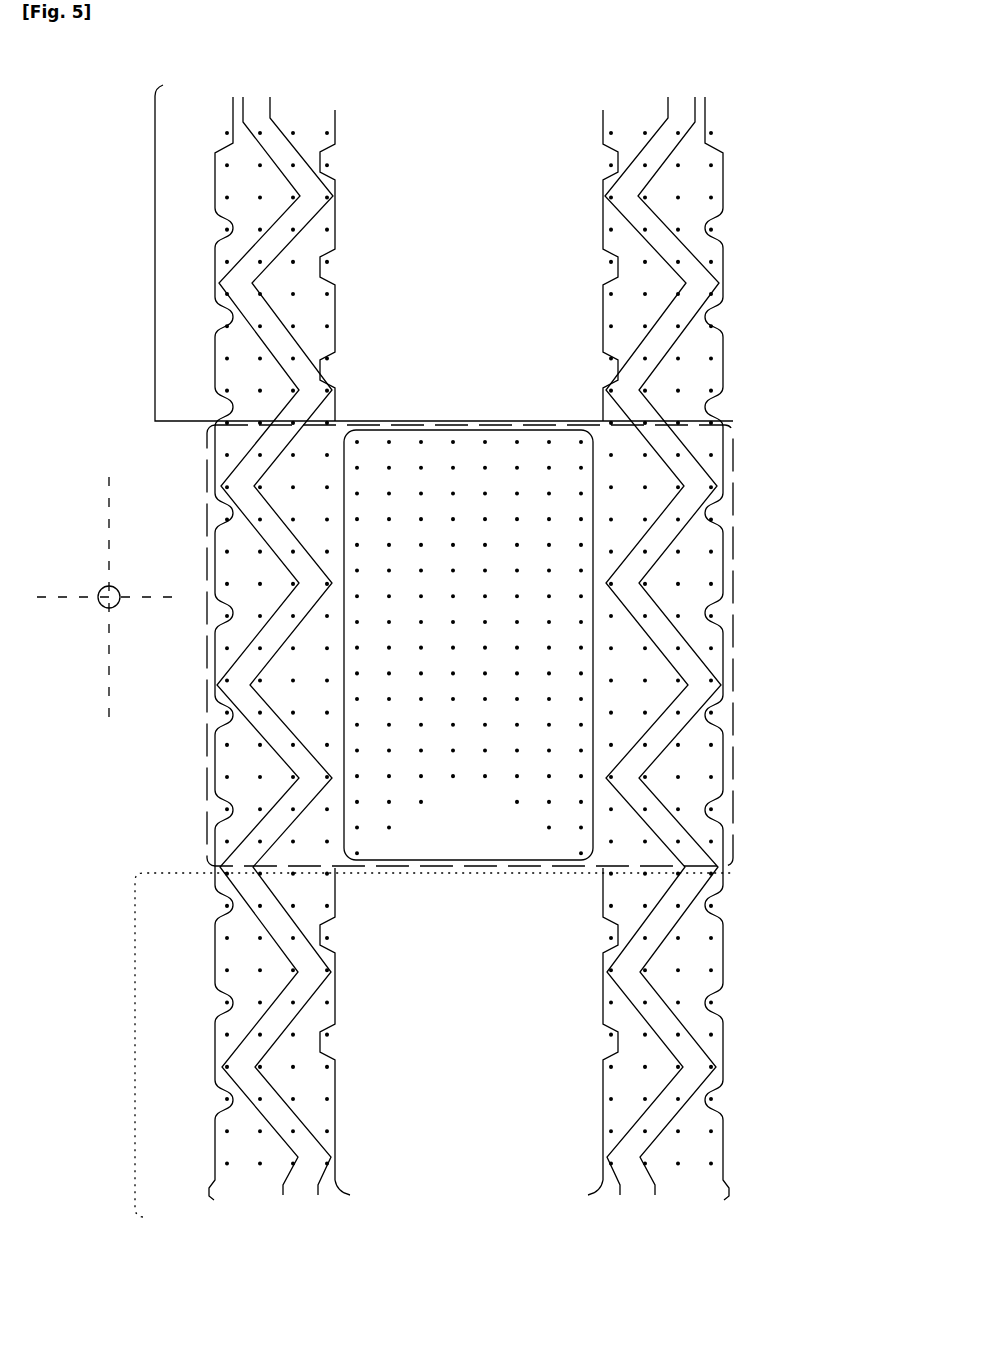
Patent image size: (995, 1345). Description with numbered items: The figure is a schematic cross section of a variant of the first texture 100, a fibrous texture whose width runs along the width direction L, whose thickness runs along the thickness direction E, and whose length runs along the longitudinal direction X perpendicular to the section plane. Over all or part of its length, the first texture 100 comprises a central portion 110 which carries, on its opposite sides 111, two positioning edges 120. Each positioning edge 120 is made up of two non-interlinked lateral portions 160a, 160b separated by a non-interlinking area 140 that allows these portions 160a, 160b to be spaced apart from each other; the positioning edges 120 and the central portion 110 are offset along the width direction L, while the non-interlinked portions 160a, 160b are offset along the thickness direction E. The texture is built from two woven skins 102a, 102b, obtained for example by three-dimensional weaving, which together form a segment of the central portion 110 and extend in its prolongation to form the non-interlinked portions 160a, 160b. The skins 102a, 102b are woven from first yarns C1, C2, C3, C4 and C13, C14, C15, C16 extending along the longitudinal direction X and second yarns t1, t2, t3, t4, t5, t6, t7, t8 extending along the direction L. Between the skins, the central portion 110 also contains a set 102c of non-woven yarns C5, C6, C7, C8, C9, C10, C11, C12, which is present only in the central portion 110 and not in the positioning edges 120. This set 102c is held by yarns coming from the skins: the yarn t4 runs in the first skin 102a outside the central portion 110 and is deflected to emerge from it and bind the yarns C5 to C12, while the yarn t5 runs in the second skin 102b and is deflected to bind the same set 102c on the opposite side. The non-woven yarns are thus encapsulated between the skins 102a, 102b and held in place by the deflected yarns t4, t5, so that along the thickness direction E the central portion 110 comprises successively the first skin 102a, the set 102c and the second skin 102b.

The first texture 100 is at (140, 113).
The central portion 110 is at (738, 598).
The opposite sides 111 is at (410, 428).
The positioning edges 120 is at (155, 247).
The non-interlinking area 140 is at (460, 258).
The non-interlinked lateral portion 160a is at (228, 182).
The non-interlinked lateral portion 160b is at (712, 180).
The first woven skin 102a is at (210, 1210).
The second woven skin 102b is at (578, 1210).
The set of non-woven yarns 102c is at (590, 366).
The first yarn C1 is at (227, 130).
The first yarn C2 is at (260, 130).
The first yarn C3 is at (293, 130).
The first yarn C4 is at (327, 130).
The non-woven yarn C5 is at (357, 442).
The non-woven yarn C6 is at (389, 467).
The non-woven yarn C7 is at (421, 492).
The non-woven yarn C8 is at (453, 518).
The non-woven yarn C9 is at (485, 518).
The non-woven yarn C10 is at (517, 492).
The non-woven yarn C11 is at (549, 467).
The non-woven yarn C12 is at (581, 442).
The first yarn C13 is at (611, 130).
The first yarn C14 is at (644, 130).
The first yarn C15 is at (677, 130).
The first yarn C16 is at (711, 130).
The second yarn t1 is at (218, 1208).
The second yarn t2 is at (286, 1208).
The second yarn t3 is at (316, 1208).
The second yarn t4 is at (354, 1208).
The second yarn t5 is at (591, 1208).
The second yarn t6 is at (628, 1208).
The second yarn t7 is at (658, 1208).
The second yarn t8 is at (727, 1208).
The width direction L is at (110, 490).
The longitudinal direction X is at (110, 596).
The thickness direction E is at (140, 597).